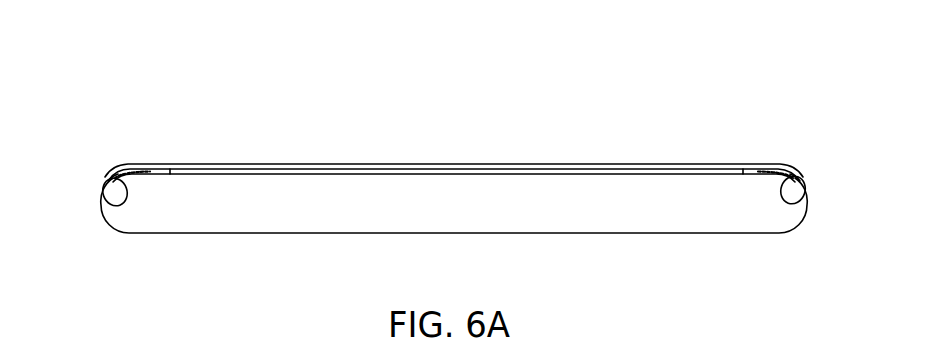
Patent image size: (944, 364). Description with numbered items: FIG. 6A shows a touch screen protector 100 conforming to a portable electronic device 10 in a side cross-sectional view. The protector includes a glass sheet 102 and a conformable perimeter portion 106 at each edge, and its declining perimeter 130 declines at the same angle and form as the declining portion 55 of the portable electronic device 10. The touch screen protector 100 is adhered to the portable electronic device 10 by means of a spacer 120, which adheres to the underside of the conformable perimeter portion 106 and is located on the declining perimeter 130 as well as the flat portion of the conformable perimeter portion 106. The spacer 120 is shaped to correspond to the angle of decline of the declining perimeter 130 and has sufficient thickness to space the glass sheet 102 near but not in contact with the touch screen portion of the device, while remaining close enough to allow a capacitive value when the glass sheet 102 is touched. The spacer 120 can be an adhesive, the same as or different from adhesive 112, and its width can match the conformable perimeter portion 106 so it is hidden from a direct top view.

The portable electronic device 10 is at (788, 240).
The touch screen protector 100 is at (733, 89).
The glass sheet 102 is at (527, 163).
The conformable perimeter portion 106 is at (144, 163).
The declining perimeter 130 is at (113, 168).
The adhesive 112 is at (827, 159).
The spacer 120 is at (454, 177).
The declining portion 55 is at (110, 201).